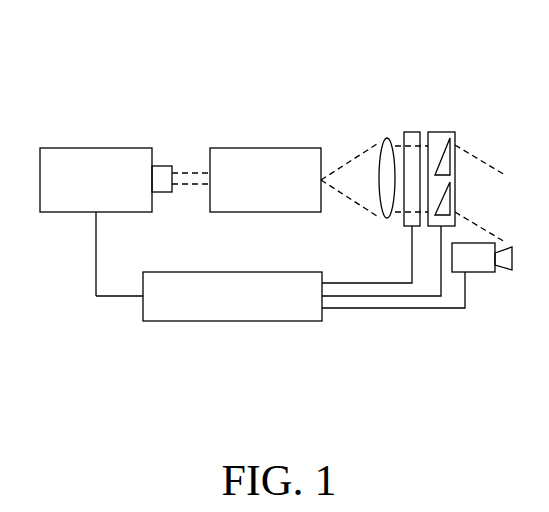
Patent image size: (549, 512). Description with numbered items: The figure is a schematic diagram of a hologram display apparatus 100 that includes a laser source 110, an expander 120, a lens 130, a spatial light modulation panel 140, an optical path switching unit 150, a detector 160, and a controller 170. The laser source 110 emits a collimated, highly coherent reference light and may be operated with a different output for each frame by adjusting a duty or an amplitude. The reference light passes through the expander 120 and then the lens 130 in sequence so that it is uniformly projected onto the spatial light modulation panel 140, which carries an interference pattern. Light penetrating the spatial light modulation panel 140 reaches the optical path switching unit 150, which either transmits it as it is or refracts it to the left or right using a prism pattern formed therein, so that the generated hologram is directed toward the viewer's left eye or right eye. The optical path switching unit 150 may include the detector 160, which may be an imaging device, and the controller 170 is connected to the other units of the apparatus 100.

The hologram display apparatus 100 is at (473, 42).
The laser source 110 is at (95, 148).
The expander 120 is at (264, 148).
The lens 130 is at (385, 140).
The spatial light modulation panel 140 is at (408, 132).
The optical path switching unit 150 is at (440, 132).
The detector 160 is at (479, 272).
The controller 170 is at (242, 321).